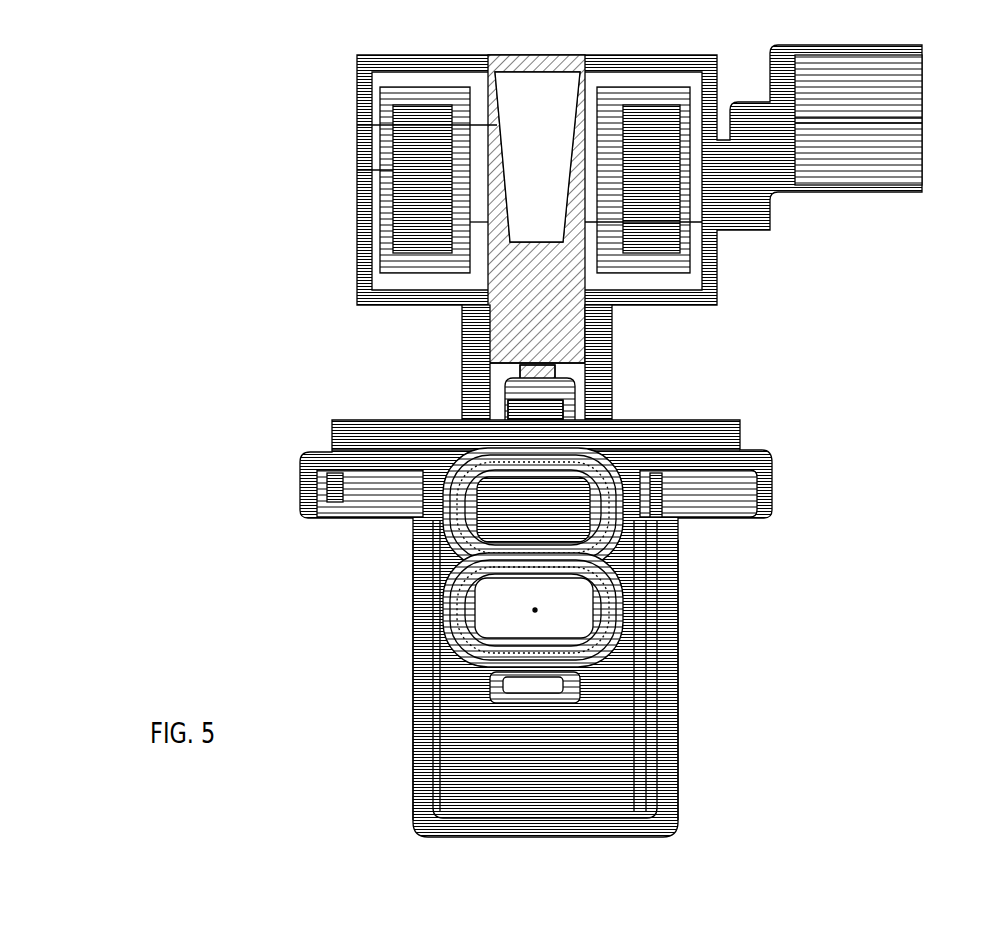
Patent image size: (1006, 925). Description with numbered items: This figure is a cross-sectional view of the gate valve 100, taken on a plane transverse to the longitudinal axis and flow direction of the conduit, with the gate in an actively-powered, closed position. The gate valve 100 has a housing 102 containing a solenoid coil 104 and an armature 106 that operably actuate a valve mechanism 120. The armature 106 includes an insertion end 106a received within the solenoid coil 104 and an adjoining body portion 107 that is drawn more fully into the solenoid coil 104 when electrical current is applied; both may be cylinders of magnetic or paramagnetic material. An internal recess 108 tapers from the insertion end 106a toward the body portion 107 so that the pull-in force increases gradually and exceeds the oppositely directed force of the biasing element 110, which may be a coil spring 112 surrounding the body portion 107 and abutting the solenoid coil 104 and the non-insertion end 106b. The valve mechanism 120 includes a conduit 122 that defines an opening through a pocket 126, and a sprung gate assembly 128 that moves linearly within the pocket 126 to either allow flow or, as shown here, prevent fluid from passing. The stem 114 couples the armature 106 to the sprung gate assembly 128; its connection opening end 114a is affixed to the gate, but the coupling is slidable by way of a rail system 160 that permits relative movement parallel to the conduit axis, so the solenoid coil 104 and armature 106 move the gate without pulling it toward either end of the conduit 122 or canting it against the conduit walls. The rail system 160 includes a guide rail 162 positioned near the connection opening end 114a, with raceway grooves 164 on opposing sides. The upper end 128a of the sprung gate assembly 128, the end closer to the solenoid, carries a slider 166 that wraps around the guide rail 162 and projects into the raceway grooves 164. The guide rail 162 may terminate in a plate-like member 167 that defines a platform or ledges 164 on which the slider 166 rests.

The gate valve 100 is at (1002, 123).
The housing 102 is at (300, 473).
The solenoid coil 104 is at (380, 170).
The armature 106 is at (465, 335).
The insertion end 106a is at (355, 122).
The non-insertion end 106b is at (613, 355).
The body portion 107 is at (717, 275).
The internal recess 108 is at (717, 240).
The biasing element 110 is at (613, 323).
The coil spring 112 is at (613, 323).
The stem 114 is at (613, 373).
The connection opening end of the stem 114a is at (500, 400).
The valve mechanism 120 is at (325, 522).
The conduit 122 is at (680, 613).
The pocket 126 is at (410, 547).
The sprung gate assembly 128 is at (412, 667).
The upper end of the sprung gate assembly 128a is at (613, 378).
The rail system 160 is at (468, 368).
The guide rail 162 is at (530, 242).
The raceway grooves 164 is at (742, 440).
The slider 166 is at (613, 378).
The plate-like member 167 is at (500, 400).